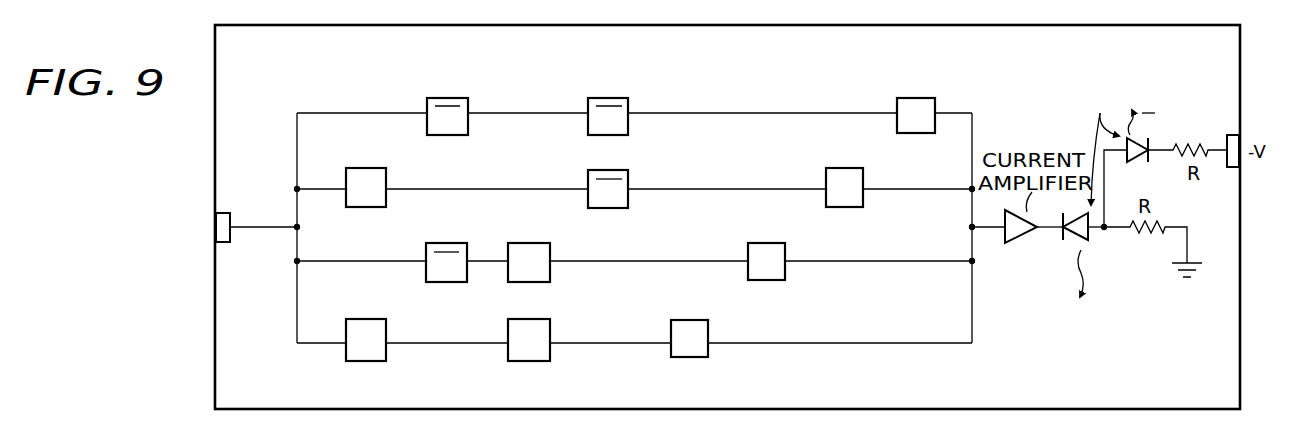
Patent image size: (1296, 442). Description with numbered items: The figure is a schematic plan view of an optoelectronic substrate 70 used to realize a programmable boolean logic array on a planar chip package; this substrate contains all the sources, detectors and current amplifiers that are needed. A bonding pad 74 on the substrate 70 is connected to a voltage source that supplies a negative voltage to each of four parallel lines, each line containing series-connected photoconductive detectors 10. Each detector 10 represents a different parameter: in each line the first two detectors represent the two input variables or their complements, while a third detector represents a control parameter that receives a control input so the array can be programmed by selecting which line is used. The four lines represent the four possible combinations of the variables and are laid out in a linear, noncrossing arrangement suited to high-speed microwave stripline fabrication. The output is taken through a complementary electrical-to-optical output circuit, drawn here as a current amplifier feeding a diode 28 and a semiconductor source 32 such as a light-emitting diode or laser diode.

The photoconductive detectors 10 is at (427, 98).
The diode 28 is at (1091, 245).
The semiconductor source (LED) 32 is at (1132, 163).
The optoelectronic substrate 70 is at (1240, 380).
The bonding pad 74 is at (230, 213).